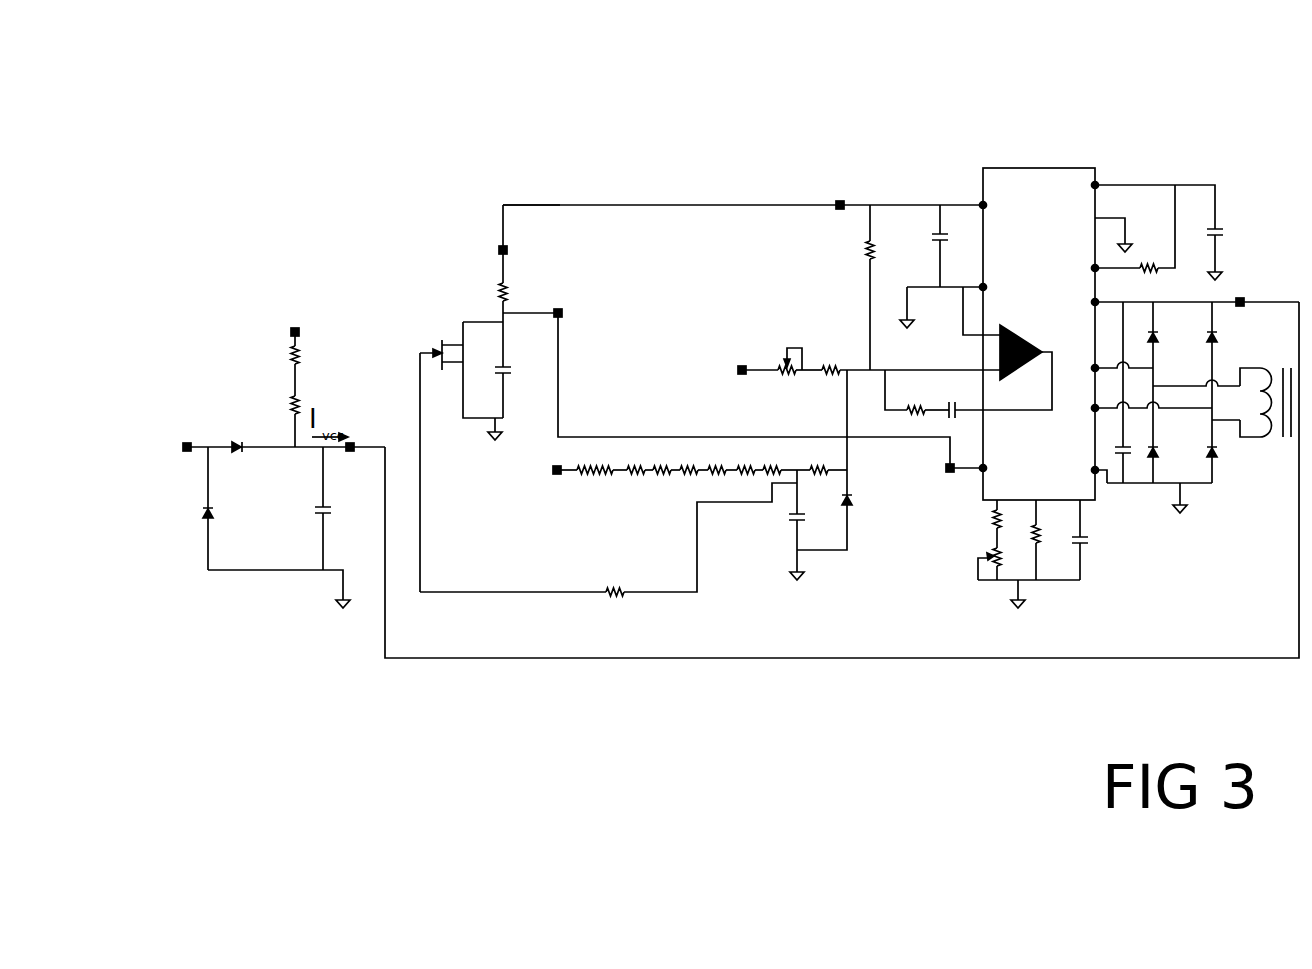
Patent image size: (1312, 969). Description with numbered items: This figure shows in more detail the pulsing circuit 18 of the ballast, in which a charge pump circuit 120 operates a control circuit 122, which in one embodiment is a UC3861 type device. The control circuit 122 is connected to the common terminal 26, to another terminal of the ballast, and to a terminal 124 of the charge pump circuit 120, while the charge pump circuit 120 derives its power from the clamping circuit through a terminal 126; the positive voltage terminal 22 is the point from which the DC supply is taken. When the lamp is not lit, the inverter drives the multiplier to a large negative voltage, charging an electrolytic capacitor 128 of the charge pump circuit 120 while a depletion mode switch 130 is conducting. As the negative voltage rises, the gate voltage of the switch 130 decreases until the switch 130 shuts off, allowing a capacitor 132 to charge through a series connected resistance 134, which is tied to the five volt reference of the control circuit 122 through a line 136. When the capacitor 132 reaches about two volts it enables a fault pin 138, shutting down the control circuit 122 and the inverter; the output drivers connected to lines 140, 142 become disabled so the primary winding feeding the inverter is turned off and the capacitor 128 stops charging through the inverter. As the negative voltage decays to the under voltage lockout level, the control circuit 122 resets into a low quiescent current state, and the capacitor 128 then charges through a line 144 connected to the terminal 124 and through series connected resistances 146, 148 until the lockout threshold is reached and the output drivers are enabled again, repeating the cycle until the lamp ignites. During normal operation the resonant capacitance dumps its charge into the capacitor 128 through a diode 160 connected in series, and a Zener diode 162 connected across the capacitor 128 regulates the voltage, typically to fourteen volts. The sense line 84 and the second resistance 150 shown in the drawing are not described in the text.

The pulsing circuit 18 is at (367, 184).
The positive voltage terminal 22 is at (295, 328).
The common terminal 26 is at (742, 366).
The sense line 84 is at (557, 466).
The charge pump circuit 120 is at (248, 370).
The control circuit 122 is at (1122, 148).
The terminal 124 is at (351, 442).
The terminal 126 is at (189, 443).
The electrolytic capacitor 128 is at (327, 506).
The depletion mode switch 130 is at (440, 341).
The capacitor 132 is at (508, 363).
The resistance 134 is at (506, 284).
The line 136 is at (570, 205).
The fault pin 138 is at (950, 470).
The line 140 is at (1095, 368).
The line 142 is at (1095, 410).
The line 144 is at (1252, 368).
The resistance 146 is at (593, 658).
The resistance 148 is at (297, 343).
The resistor 150 is at (297, 396).
The diode 160 is at (239, 450).
The Zener diode 162 is at (205, 513).